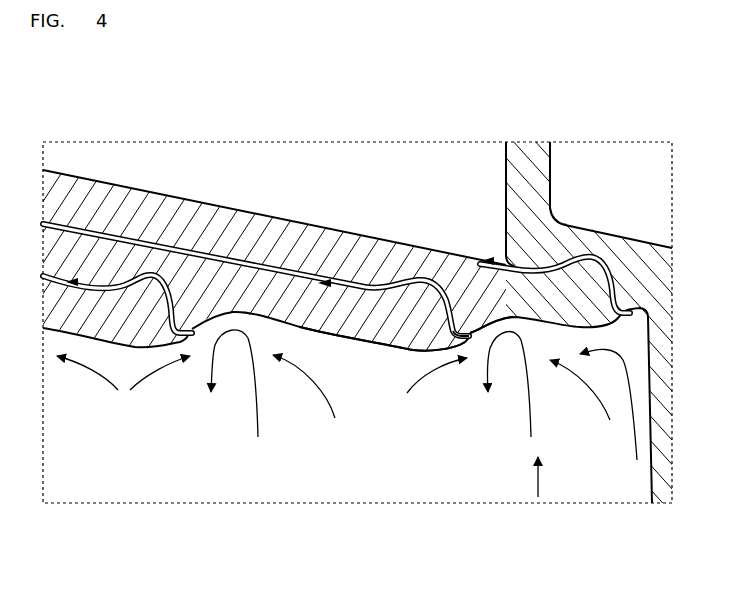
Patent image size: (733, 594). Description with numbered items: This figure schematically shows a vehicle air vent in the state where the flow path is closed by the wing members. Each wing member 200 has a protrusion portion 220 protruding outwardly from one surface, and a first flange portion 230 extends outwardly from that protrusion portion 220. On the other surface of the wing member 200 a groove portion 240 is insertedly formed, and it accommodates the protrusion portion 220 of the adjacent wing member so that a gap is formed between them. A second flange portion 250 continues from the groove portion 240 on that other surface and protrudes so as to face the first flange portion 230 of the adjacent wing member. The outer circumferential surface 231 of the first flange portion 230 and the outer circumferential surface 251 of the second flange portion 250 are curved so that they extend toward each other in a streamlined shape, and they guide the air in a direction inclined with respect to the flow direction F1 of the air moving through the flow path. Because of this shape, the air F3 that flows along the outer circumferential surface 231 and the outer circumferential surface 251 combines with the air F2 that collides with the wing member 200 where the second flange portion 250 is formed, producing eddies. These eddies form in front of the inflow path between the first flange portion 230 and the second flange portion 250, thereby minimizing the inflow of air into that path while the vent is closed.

The wing member 200 is at (243, 280).
The protrusion portion 220 is at (417, 303).
The first flange portion 230 is at (445, 358).
The outer circumferential surface of the first flange portion 231 is at (482, 340).
The groove portion 240 is at (433, 362).
The second flange portion 250 is at (463, 335).
The outer circumferential surface of the second flange portion 251 is at (505, 330).
The flow direction F1 is at (538, 497).
The air colliding with the wing member F2 is at (533, 397).
The air flowing along the outer circumferential surfaces F3 is at (458, 358).